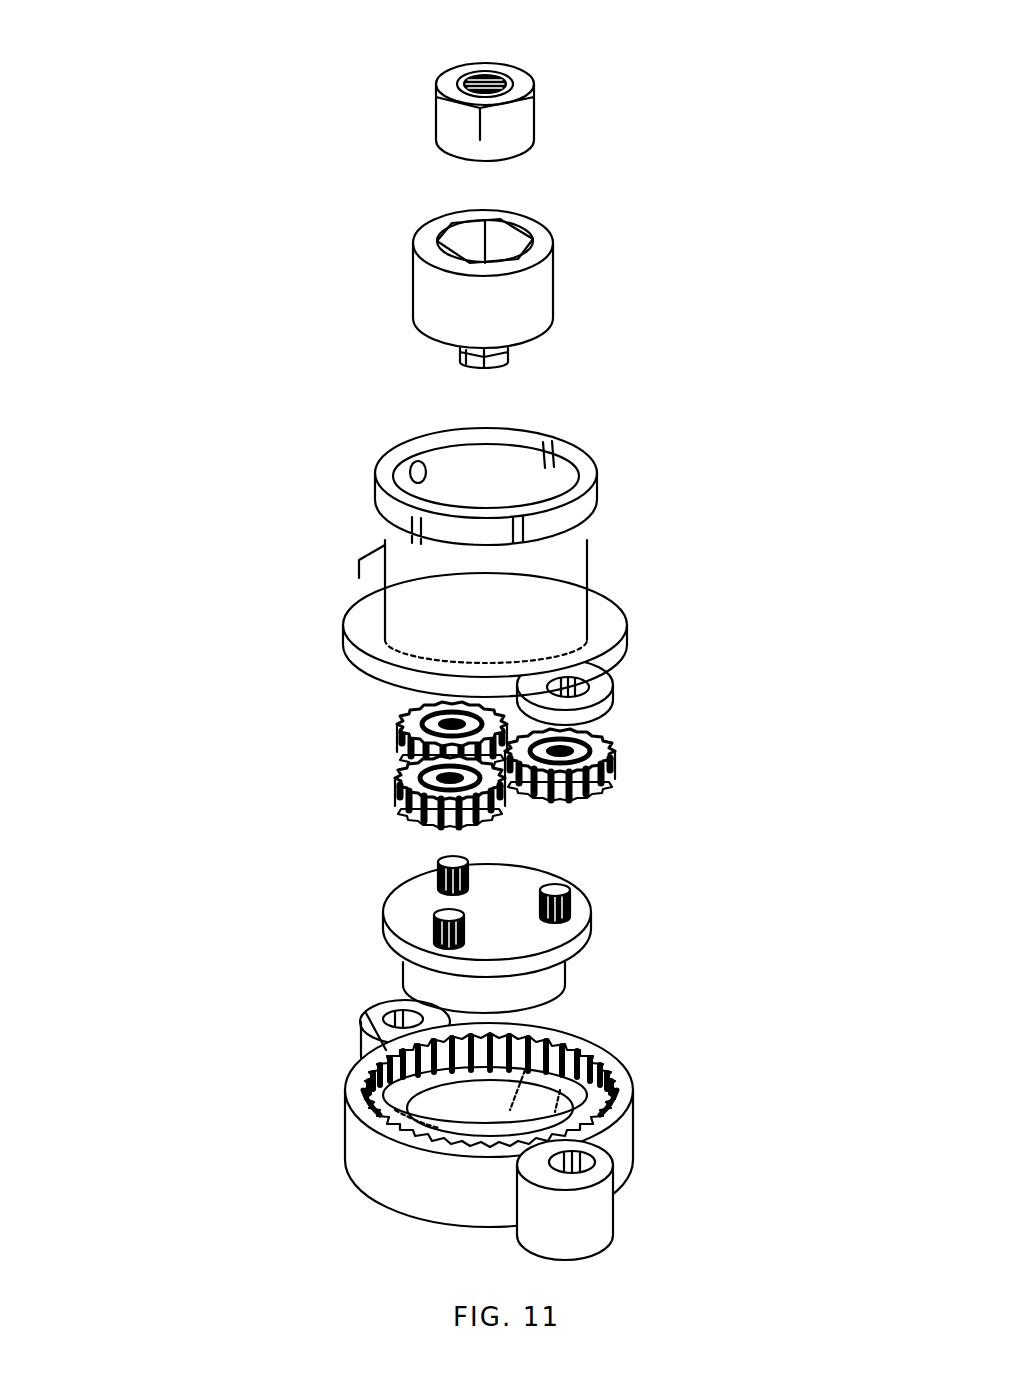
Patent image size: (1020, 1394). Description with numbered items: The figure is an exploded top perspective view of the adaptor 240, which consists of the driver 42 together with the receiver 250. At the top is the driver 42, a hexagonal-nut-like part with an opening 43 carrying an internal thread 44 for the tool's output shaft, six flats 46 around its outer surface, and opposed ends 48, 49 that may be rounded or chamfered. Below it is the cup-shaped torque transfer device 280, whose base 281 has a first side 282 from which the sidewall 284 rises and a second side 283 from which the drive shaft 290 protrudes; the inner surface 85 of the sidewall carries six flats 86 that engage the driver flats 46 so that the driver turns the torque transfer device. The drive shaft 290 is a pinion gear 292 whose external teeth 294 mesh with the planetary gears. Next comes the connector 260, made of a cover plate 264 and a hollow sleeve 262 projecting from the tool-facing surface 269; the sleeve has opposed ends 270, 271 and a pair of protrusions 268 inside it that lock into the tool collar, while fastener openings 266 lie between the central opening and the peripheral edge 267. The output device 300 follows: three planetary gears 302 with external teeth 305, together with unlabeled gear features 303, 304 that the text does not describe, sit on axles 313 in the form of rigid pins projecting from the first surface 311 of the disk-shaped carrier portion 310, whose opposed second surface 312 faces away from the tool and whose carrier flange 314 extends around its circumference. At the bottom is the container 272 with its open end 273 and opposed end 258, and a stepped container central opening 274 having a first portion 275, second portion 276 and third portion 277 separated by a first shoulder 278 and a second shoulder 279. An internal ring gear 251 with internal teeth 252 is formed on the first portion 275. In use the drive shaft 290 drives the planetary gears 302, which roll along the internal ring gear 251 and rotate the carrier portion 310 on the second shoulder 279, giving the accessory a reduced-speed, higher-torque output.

The driver 42 is at (525, 94).
The end of the driver 48 is at (525, 94).
The opening 43 is at (466, 72).
The internal thread 44 is at (486, 70).
The flat 46 is at (536, 96).
The end of the driver 49 is at (516, 146).
The inner surface 85 is at (515, 219).
The flat 86 is at (465, 238).
The torque transfer device 280 is at (538, 288).
The sidewall 284 is at (538, 288).
The base 281 is at (421, 336).
The first side 282 is at (418, 229).
The second side 283 is at (560, 340).
The drive shaft 290 is at (538, 374).
The pinion gear 292 is at (538, 374).
The external teeth 294 is at (461, 359).
The connector 260 is at (526, 564).
The cover plate 264 is at (526, 564).
The sleeve 262 is at (581, 546).
The fastener openings 266 is at (612, 676).
The peripheral edge 267 is at (376, 665).
The protrusions 268 is at (417, 460).
The tool-facing surface 269 is at (500, 637).
The end of the sleeve 270 is at (497, 474).
The end of the sleeve 271 is at (376, 598).
The output device 300 is at (692, 718).
The planetary gears 302 is at (401, 711).
The gear hub 303 is at (436, 706).
The gear teeth 304 is at (406, 733).
The external teeth 305 is at (481, 813).
The carrier portion 310 is at (501, 931).
The first surface 311 is at (501, 931).
The second surface 312 is at (566, 991).
The axles 313 is at (432, 926).
The carrier flange 314 is at (586, 946).
The end of the container 258 is at (503, 1112).
The container 272 is at (503, 1112).
The internal ring gear 251 is at (368, 1016).
The internal teeth 252 is at (396, 1010).
The open end 273 is at (618, 1081).
The container central opening 274 is at (536, 1050).
The first portion 275 is at (376, 1046).
The second portion 276 is at (368, 1080).
The third portion 277 is at (401, 1121).
The first shoulder 278 is at (621, 1105).
The second shoulder 279 is at (586, 1060).
The adaptor 240 is at (200, 1214).
The receiver 250 is at (283, 1212).